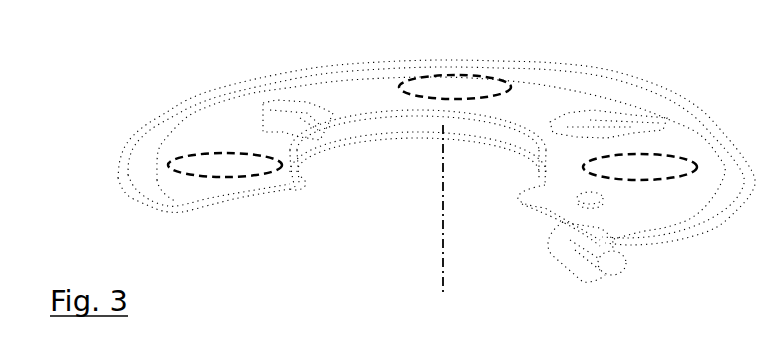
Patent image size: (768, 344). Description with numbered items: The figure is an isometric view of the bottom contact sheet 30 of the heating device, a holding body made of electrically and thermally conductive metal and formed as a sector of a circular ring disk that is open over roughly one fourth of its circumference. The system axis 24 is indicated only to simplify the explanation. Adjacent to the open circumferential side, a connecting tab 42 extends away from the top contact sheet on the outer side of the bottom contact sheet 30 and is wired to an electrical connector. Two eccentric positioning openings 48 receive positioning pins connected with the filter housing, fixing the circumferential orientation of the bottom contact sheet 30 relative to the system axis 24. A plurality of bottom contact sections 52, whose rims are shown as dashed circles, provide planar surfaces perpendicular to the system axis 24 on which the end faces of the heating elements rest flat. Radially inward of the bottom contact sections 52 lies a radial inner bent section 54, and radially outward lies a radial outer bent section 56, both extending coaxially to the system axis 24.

The bottom contact sheet 30 is at (171, 124).
The bottom contact sections 52 is at (223, 160).
The positioning openings 48 is at (296, 122).
The radial inner bent section 54 is at (296, 186).
The radial outer bent section 56 is at (180, 207).
The system axis 24 is at (445, 250).
The connecting tab 42 is at (612, 266).